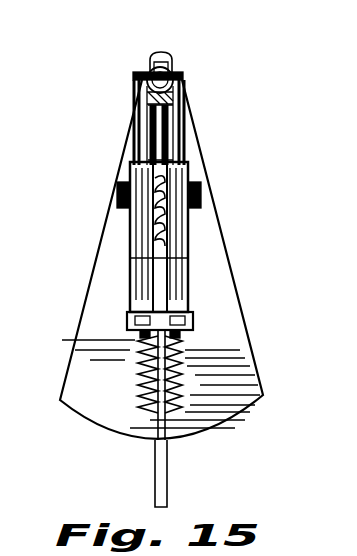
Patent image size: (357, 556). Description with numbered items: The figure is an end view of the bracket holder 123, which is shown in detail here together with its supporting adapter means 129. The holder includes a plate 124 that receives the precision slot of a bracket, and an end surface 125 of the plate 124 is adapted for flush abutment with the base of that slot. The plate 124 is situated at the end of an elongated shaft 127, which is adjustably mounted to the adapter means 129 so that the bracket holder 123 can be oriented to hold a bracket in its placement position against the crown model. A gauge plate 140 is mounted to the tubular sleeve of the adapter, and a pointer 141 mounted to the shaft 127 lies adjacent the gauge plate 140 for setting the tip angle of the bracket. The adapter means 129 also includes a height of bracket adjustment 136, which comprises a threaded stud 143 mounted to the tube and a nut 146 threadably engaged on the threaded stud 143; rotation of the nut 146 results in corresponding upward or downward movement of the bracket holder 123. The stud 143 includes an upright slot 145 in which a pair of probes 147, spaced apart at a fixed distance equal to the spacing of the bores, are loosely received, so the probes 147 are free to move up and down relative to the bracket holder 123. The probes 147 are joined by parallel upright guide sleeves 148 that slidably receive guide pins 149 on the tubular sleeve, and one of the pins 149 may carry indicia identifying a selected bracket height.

The bracket holder 123 is at (178, 64).
The plate 124 is at (185, 75).
The end surface 125 is at (176, 88).
The elongated shaft 127 is at (166, 57).
The adapter means 129 is at (218, 205).
The height of bracket adjustment 136 is at (204, 175).
The gauge plate 140 is at (208, 296).
The pointer 141 is at (168, 466).
The threaded stud 143 is at (183, 340).
The upright slot 145 is at (140, 399).
The nut 146 is at (117, 196).
The probes 147 is at (172, 162).
The upright guide sleeves 148 is at (165, 240).
The guide pins 149 is at (130, 328).